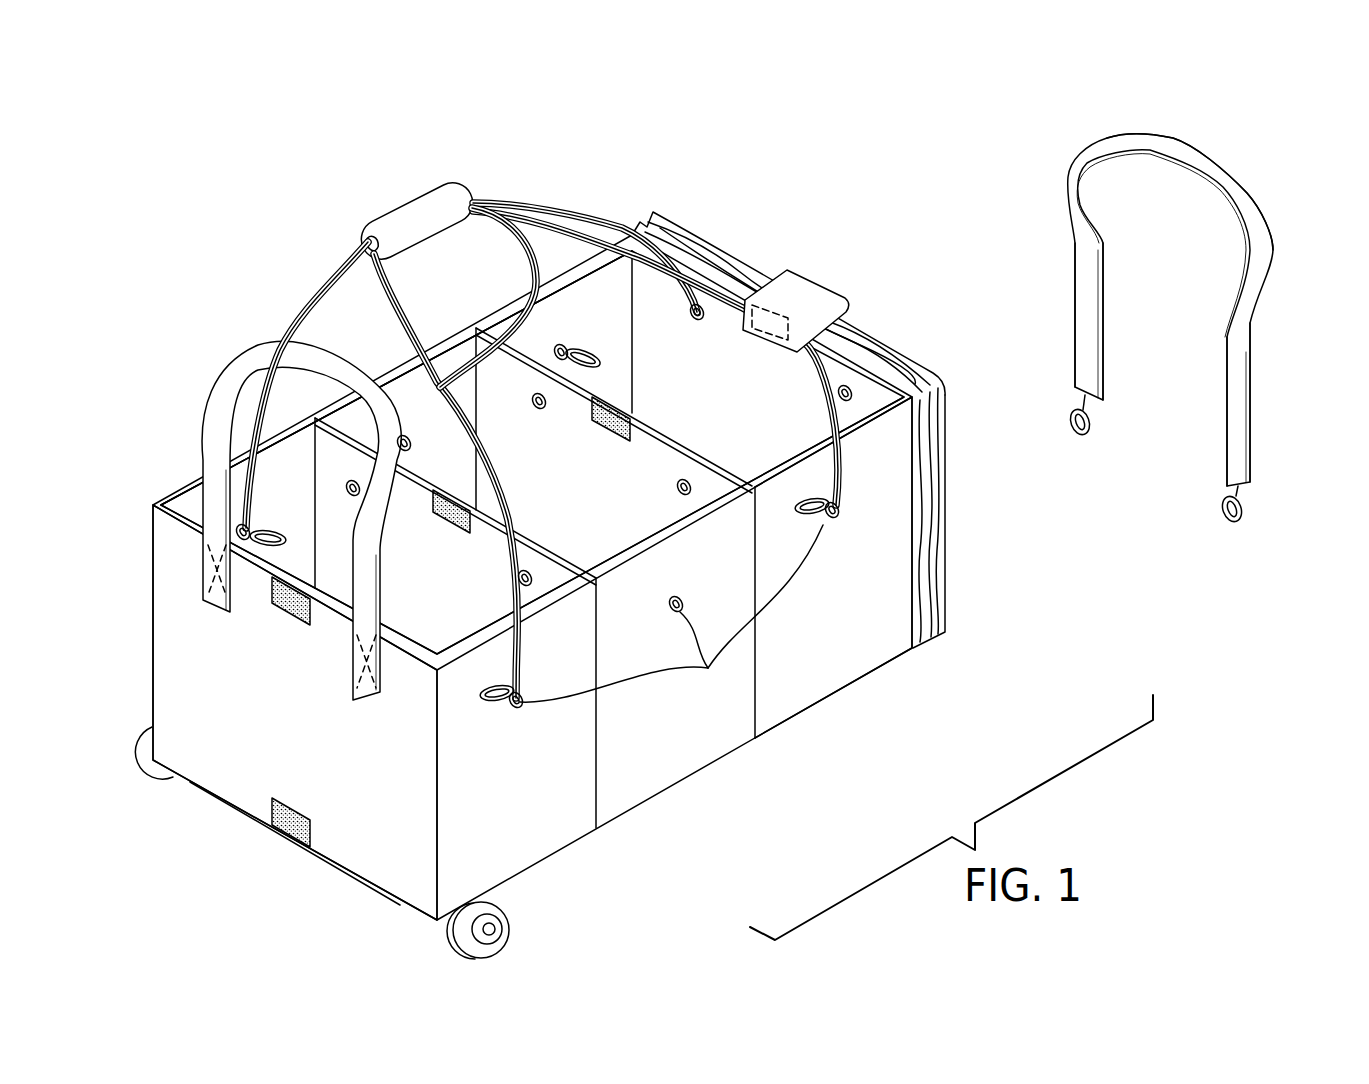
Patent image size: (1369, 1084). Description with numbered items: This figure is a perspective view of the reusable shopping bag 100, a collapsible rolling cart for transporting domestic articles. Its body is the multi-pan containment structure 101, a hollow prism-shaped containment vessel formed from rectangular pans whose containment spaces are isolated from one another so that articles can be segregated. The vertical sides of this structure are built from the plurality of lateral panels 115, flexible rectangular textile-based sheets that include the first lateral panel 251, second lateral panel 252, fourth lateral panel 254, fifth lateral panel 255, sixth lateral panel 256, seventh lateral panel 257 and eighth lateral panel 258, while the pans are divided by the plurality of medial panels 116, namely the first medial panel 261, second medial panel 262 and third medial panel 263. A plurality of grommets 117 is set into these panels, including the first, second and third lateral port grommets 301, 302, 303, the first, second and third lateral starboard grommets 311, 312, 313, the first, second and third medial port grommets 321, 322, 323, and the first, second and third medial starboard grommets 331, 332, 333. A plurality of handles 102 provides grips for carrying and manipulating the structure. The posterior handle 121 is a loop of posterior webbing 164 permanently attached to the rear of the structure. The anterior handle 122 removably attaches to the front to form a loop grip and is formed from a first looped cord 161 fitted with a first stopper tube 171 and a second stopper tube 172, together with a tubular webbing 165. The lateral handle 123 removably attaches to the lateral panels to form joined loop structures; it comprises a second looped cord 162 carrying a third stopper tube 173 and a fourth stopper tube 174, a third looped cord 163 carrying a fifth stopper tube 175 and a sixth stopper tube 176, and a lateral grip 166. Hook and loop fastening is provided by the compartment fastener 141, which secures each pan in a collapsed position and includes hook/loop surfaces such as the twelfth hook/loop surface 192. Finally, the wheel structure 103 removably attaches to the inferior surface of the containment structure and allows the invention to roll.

The reusable shopping bag 100 is at (184, 184).
The multi-pan containment structure 101 is at (167, 497).
The plurality of handles 102 is at (686, 367).
The wheel structure 103 is at (450, 933).
The plurality of lateral panels 115 is at (504, 324).
The plurality of medial panels 116 is at (683, 463).
The plurality of grommets 117 is at (671, 616).
The posterior handle 121 is at (232, 360).
The anterior handle 122 is at (1188, 343).
The lateral handle 123 is at (495, 205).
The compartment fastener 141 is at (280, 600).
The first looped cord 161 is at (1090, 312).
The second looped cord 162 is at (327, 293).
The third looped cord 163 is at (397, 327).
The posterior webbing 164 is at (363, 605).
The tubular webbing 165 is at (1262, 253).
The lateral grip 166 is at (420, 207).
The first stopper tube 171 is at (1074, 440).
The second stopper tube 172 is at (1222, 522).
The third stopper tube 173 is at (278, 532).
The fourth stopper tube 174 is at (470, 698).
The fifth stopper tube 175 is at (607, 368).
The sixth stopper tube 176 is at (806, 495).
The twelfth hook/loop surface 192 is at (297, 817).
The first lateral panel 251 is at (207, 490).
The second lateral panel 252 is at (500, 855).
The fourth lateral panel 254 is at (715, 750).
The fifth lateral panel 255 is at (627, 253).
The sixth lateral panel 256 is at (820, 695).
The seventh lateral panel 257 is at (633, 228).
The eighth lateral panel 258 is at (913, 647).
The first medial panel 261 is at (520, 555).
The second medial panel 262 is at (668, 453).
The third medial panel 263 is at (820, 360).
The first lateral port grommet 301 is at (240, 530).
The second lateral port grommet 302 is at (410, 440).
The third lateral port grommet 303 is at (557, 350).
The first lateral starboard grommet 311 is at (514, 705).
The second lateral starboard grommet 312 is at (683, 605).
The third lateral starboard grommet 313 is at (833, 517).
The first medial port grommet 321 is at (353, 497).
The second medial port grommet 322 is at (532, 401).
The third medial port grommet 323 is at (698, 305).
The first medial starboard grommet 331 is at (531, 586).
The second medial starboard grommet 332 is at (678, 490).
The third medial starboard grommet 333 is at (853, 390).